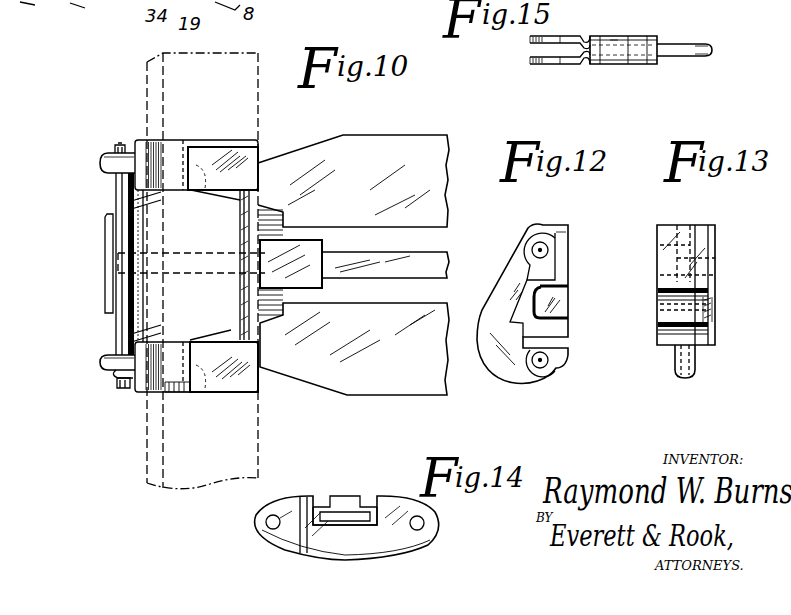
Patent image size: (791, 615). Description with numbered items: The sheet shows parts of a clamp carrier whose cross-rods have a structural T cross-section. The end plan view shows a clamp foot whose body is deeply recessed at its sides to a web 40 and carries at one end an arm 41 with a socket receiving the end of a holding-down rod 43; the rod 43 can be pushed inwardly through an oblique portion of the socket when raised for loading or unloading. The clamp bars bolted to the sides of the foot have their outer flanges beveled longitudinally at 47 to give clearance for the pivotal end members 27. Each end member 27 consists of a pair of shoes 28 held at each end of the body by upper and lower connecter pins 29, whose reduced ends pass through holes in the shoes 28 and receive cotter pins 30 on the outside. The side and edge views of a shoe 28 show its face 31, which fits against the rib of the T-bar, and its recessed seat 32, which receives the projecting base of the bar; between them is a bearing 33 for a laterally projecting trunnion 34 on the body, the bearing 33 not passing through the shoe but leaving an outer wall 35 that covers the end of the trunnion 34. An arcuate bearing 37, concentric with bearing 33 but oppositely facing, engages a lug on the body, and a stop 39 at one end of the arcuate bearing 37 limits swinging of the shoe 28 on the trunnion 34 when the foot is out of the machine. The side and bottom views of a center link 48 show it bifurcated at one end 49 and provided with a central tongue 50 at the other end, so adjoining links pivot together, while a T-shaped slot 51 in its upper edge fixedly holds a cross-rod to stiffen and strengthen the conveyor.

In FIG. 10, the end member 27 is at (102, 166).
In FIG. 12, the end member 27 is at (522, 386).
In FIG. 10, the shoe 28 is at (98, 180).
In FIG. 12, the shoe 28 is at (560, 230).
In FIG. 13, the shoe 28 is at (678, 235).
In FIG. 10, the pin 29 is at (115, 383).
In FIG. 10, the cotter pin 30 is at (128, 142).
In FIG. 12, the face 31 is at (569, 258).
In FIG. 13, the face 31 is at (716, 256).
In FIG. 12, the recessed seat 32 is at (550, 335).
In FIG. 13, the recessed seat 32 is at (700, 333).
In FIG. 12, the bearing 33 is at (542, 300).
In FIG. 13, the bearing 33 is at (714, 318).
In FIG. 10, the trunnion 34 is at (173, 157).
In FIG. 10, the outer wall 35 is at (165, 390).
In FIG. 12, the outer wall 35 is at (560, 313).
In FIG. 13, the outer wall 35 is at (705, 300).
In FIG. 12, the arcuate bearing 37 is at (520, 290).
In FIG. 12, the stop 39 is at (515, 315).
In FIG. 10, the web 40 is at (108, 315).
In FIG. 10, the arm 41 is at (320, 290).
In FIG. 10, the holding-down rod 43 is at (403, 274).
In FIG. 10, the beveled flange 47 is at (308, 146).
In FIG. 15, the center link 48 is at (626, 64).
In FIG. 14, the center link 48 is at (368, 550).
In FIG. 15, the bifurcated end 49 is at (555, 65).
In FIG. 14, the bifurcated end 49 is at (278, 536).
In FIG. 15, the central tongue 50 is at (698, 58).
In FIG. 14, the central tongue 50 is at (426, 536).
In FIG. 15, the slot 51 is at (618, 44).
In FIG. 14, the slot 51 is at (342, 507).